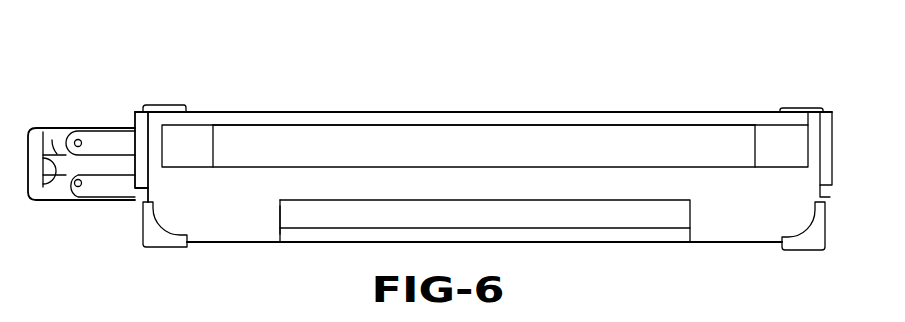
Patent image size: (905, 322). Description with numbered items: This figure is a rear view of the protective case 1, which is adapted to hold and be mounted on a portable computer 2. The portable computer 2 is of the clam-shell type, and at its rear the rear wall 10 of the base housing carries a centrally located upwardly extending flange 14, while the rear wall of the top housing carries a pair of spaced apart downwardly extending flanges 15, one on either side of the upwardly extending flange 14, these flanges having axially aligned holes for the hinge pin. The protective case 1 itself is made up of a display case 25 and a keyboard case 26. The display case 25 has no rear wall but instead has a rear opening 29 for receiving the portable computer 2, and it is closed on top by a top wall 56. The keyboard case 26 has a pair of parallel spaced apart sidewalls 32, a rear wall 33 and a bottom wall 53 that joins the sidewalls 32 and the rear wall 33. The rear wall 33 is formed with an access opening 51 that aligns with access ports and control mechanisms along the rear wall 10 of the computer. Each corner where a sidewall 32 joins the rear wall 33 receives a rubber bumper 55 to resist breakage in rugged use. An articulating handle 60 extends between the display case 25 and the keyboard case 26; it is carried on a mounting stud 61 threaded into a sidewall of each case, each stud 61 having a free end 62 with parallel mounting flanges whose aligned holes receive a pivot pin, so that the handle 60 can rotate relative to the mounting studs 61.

The protective case 1 is at (626, 80).
The portable computer 2 is at (626, 235).
The rear wall 10 is at (592, 218).
The upwardly extending flange 14 is at (478, 138).
The downwardly extending flanges 15 is at (193, 137).
The display case 25 is at (384, 104).
The keyboard case 26 is at (718, 248).
The rear opening 29 is at (253, 118).
The sidewalls 32 is at (824, 197).
The rear wall 33 is at (233, 223).
The access opening 51 is at (280, 213).
The bottom wall 53 is at (332, 240).
The rubber bumper 55 is at (158, 242).
The top wall 56 is at (558, 113).
The articulating handle 60 is at (31, 121).
The mounting stud 61 is at (118, 137).
The free end 62 is at (77, 131).